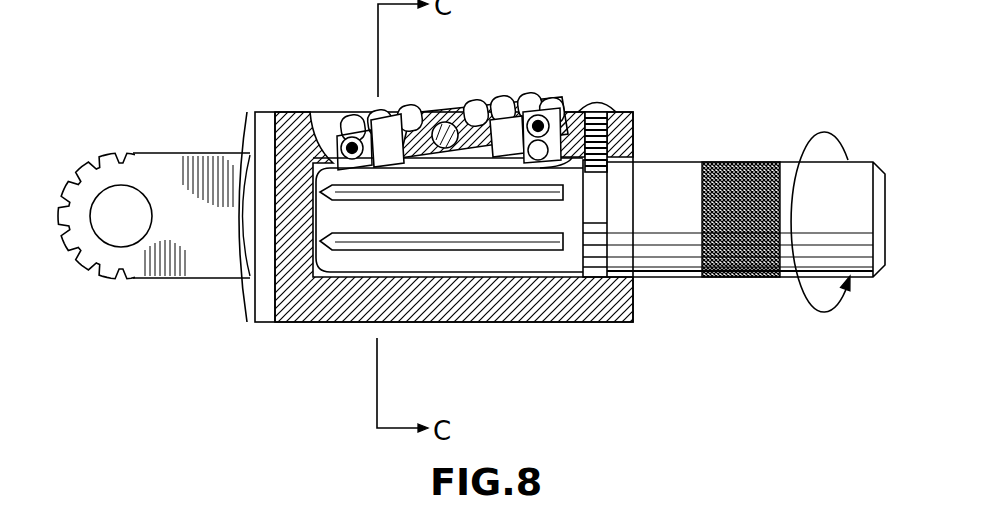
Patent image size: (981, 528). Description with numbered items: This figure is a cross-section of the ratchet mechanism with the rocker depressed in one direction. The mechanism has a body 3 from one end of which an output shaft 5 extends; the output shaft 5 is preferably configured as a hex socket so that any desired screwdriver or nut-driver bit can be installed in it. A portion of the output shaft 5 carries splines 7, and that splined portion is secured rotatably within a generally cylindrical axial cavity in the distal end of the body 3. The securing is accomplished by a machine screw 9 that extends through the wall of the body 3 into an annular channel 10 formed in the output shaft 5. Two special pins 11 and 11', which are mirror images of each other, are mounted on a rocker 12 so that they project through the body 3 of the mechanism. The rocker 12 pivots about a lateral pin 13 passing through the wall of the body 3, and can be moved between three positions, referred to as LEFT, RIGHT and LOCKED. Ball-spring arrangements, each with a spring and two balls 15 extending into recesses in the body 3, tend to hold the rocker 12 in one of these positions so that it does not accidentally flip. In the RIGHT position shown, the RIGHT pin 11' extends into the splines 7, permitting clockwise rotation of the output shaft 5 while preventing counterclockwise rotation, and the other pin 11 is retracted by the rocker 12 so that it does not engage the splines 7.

The body 3 is at (605, 323).
The output shaft 5 is at (665, 264).
The splines 7 is at (330, 167).
The machine screw 9 is at (598, 106).
The annular channel 10 is at (597, 198).
The pin 11 is at (513, 94).
The RIGHT pin 11' is at (374, 108).
The rocker 12 is at (427, 120).
The lateral pin 13 is at (447, 124).
The balls 15 is at (541, 132).